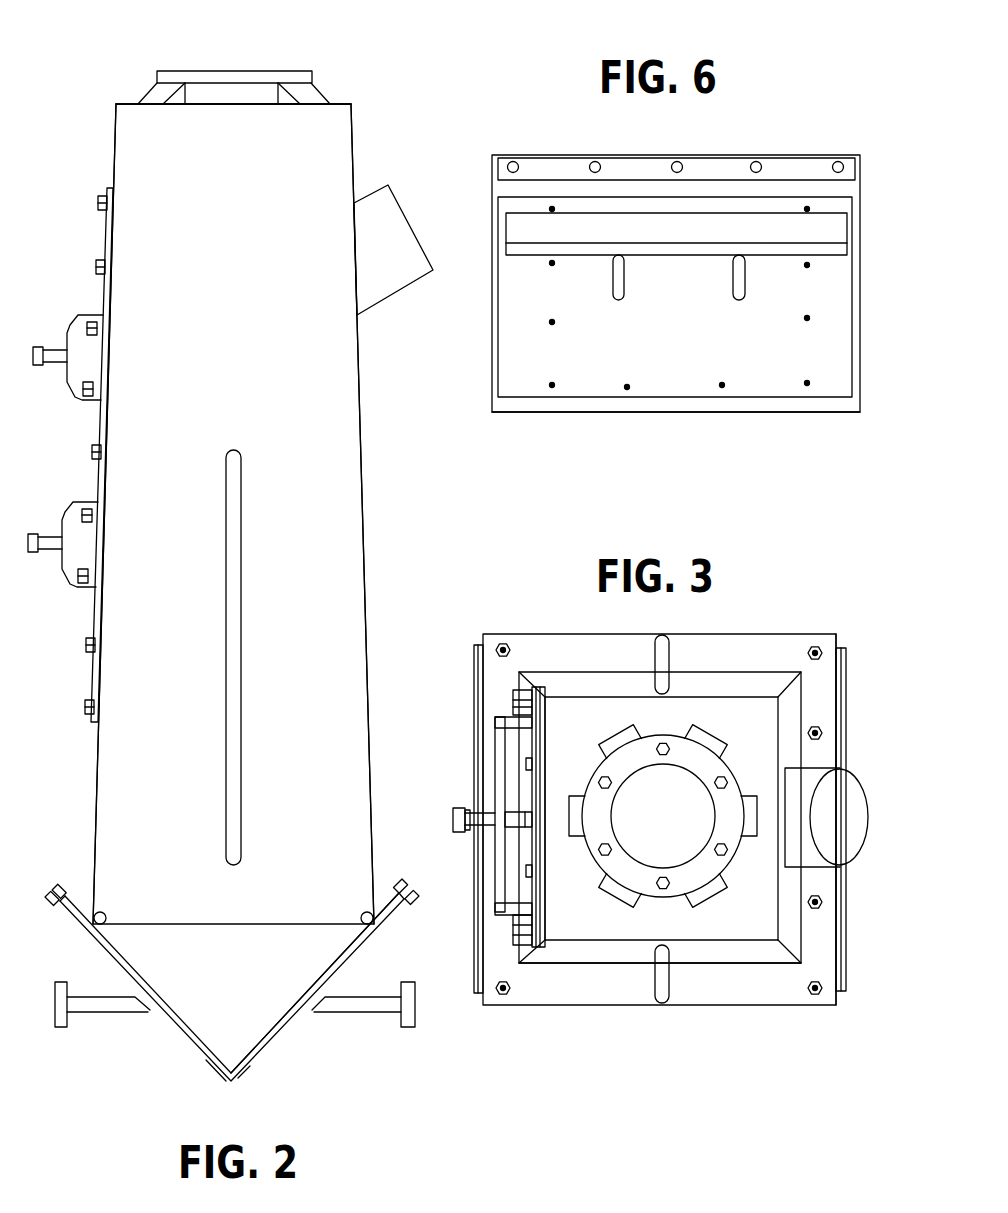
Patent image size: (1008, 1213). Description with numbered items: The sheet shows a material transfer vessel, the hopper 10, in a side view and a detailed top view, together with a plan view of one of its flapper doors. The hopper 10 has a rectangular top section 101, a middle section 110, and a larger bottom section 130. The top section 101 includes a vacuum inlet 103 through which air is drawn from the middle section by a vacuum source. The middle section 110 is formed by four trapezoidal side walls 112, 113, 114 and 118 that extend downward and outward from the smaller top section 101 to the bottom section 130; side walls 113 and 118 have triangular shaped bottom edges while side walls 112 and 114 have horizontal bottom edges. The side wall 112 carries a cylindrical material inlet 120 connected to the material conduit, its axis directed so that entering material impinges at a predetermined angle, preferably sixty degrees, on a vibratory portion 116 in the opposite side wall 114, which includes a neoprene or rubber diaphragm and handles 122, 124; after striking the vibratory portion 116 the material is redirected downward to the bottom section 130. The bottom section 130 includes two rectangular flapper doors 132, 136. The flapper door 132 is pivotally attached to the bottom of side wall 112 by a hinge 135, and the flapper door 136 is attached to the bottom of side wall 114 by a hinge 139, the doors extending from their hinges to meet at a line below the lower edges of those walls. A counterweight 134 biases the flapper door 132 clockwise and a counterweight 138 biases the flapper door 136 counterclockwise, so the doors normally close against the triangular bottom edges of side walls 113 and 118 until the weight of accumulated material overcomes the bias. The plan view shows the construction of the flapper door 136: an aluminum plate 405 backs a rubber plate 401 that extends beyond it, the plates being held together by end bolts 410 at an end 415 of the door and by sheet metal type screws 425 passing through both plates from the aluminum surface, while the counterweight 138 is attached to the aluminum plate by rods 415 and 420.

In FIG. 2, the hopper 10 is at (397, 510).
In FIG. 2, the top section 101 is at (345, 103).
In FIG. 3, the top section 101 is at (738, 735).
In FIG. 2, the vacuum inlet 103 is at (277, 71).
In FIG. 3, the vacuum inlet 103 is at (648, 800).
In FIG. 2, the middle section 110 is at (273, 418).
In FIG. 2, the side wall 112 is at (367, 612).
In FIG. 3, the side wall 112 is at (795, 708).
In FIG. 3, the side wall 113 is at (750, 965).
In FIG. 2, the side wall 114 is at (113, 148).
In FIG. 3, the side wall 114 is at (523, 632).
In FIG. 2, the vibratory portion 116 is at (103, 240).
In FIG. 3, the vibratory portion 116 is at (532, 748).
In FIG. 3, the side wall 118 is at (757, 683).
In FIG. 2, the material inlet 120 is at (400, 200).
In FIG. 3, the material inlet 120 is at (806, 813).
In FIG. 2, the handle 122 is at (242, 588).
In FIG. 3, the handle 122 is at (655, 982).
In FIG. 3, the handle 124 is at (655, 653).
In FIG. 2, the bottom section 130 is at (204, 1000).
In FIG. 2, the flapper door 132 is at (362, 956).
In FIG. 2, the counterweight 134 is at (415, 1025).
In FIG. 2, the hinge 135 is at (362, 916).
In FIG. 2, the flapper door 136 is at (173, 1030).
In FIG. 6, the flapper door 136 is at (800, 453).
In FIG. 2, the counterweight 138 is at (60, 1027).
In FIG. 6, the counterweight 138 is at (520, 232).
In FIG. 2, the hinge 139 is at (108, 914).
In FIG. 6, the rubber plate 401 is at (520, 405).
In FIG. 6, the aluminum plate 405 is at (515, 355).
In FIG. 6, the end bolts 410 is at (513, 160).
In FIG. 6, the end of the flapper door 415 is at (795, 153).
In FIG. 6, the rod 420 is at (732, 278).
In FIG. 6, the sheet metal type screws 425 is at (553, 387).